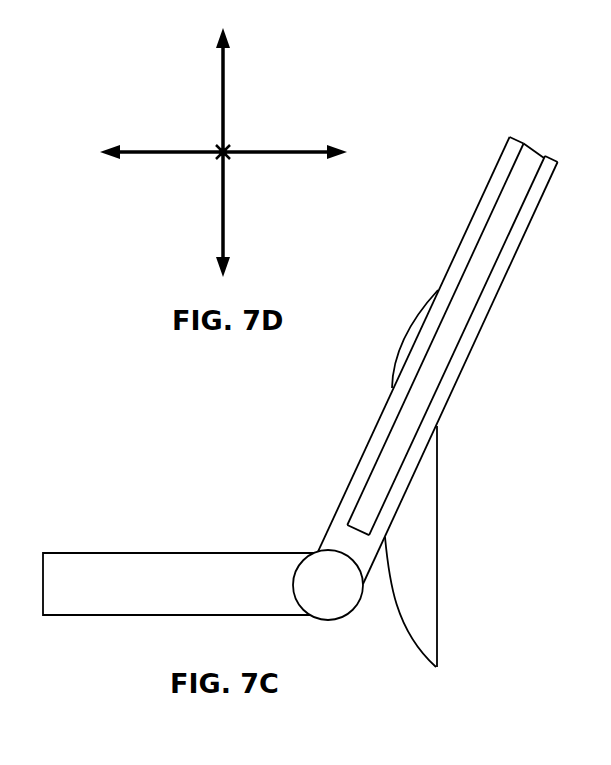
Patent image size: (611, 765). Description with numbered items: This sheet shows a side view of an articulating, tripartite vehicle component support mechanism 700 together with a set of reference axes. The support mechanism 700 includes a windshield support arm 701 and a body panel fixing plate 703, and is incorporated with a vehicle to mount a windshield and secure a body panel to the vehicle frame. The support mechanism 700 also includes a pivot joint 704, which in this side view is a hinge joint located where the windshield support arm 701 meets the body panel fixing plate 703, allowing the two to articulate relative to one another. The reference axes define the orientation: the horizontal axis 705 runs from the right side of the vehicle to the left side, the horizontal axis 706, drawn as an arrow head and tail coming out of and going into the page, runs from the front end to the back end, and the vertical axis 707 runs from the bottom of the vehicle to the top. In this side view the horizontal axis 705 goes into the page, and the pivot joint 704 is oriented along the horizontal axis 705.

In FIG. 7C, the support mechanism 700 is at (248, 426).
In FIG. 7C, the windshield support arm 701 is at (449, 267).
In FIG. 7C, the body panel fixing plate 703 is at (0, 688).
In FIG. 7C, the pivot joint 704 is at (328, 585).
In FIG. 7D, the horizontal axis 705 is at (178, 151).
In FIG. 7D, the horizontal axis 706 is at (242, 131).
In FIG. 7D, the vertical axis 707 is at (221, 212).